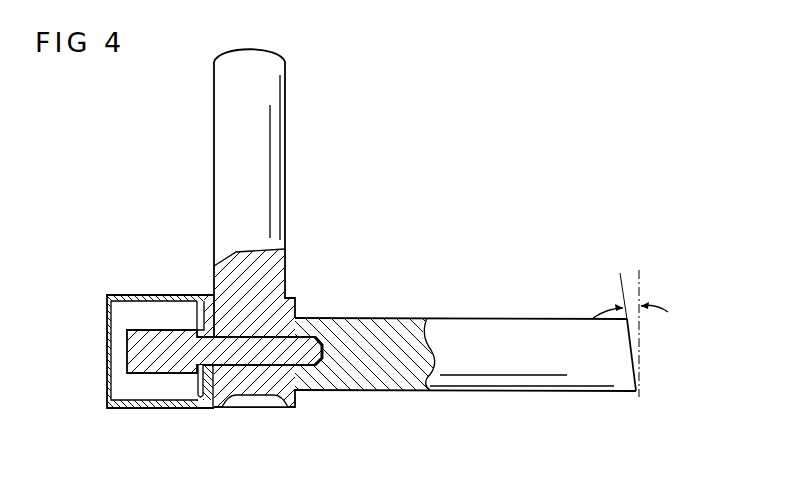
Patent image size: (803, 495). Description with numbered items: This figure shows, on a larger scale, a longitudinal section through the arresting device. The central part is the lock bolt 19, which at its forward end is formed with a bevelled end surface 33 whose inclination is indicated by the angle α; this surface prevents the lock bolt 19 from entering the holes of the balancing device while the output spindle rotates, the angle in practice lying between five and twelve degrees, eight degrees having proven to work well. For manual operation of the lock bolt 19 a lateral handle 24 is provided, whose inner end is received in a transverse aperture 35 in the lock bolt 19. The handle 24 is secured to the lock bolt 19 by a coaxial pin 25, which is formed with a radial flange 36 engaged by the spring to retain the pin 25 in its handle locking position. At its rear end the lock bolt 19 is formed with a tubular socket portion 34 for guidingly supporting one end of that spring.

The lateral handle 24 is at (277, 128).
The lock bolt 19 is at (495, 382).
The bevelled end surface 33 is at (630, 350).
The coaxial pin 25 is at (137, 350).
The tubular socket portion 34 is at (142, 402).
The radial flange 36 is at (200, 385).
The transverse aperture 35 is at (220, 398).